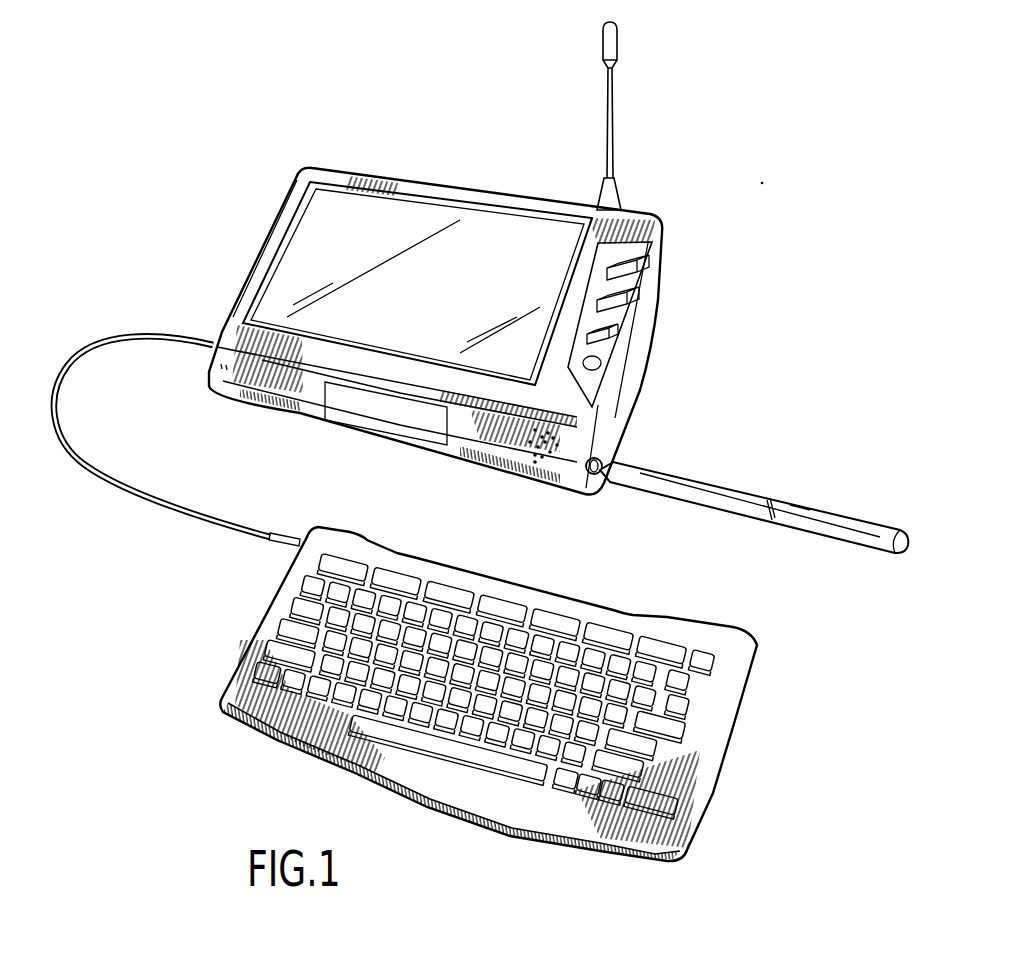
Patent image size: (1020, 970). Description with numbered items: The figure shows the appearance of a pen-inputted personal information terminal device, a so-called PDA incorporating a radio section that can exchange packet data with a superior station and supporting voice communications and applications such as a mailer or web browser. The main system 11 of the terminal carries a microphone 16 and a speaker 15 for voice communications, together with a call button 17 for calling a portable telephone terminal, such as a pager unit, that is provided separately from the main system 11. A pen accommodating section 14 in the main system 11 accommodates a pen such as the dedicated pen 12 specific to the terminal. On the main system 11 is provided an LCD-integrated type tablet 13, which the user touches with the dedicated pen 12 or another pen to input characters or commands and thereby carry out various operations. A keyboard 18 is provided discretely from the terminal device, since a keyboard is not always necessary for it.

The main system of the terminal 11 is at (658, 217).
The dedicated pen 12 is at (697, 480).
The LCD-integrated type tablet 13 is at (427, 319).
The pen accommodating section 14 is at (592, 480).
The speaker 15 is at (540, 438).
The microphone 16 is at (212, 369).
The call button 17 is at (627, 325).
The keyboard 18 is at (754, 633).